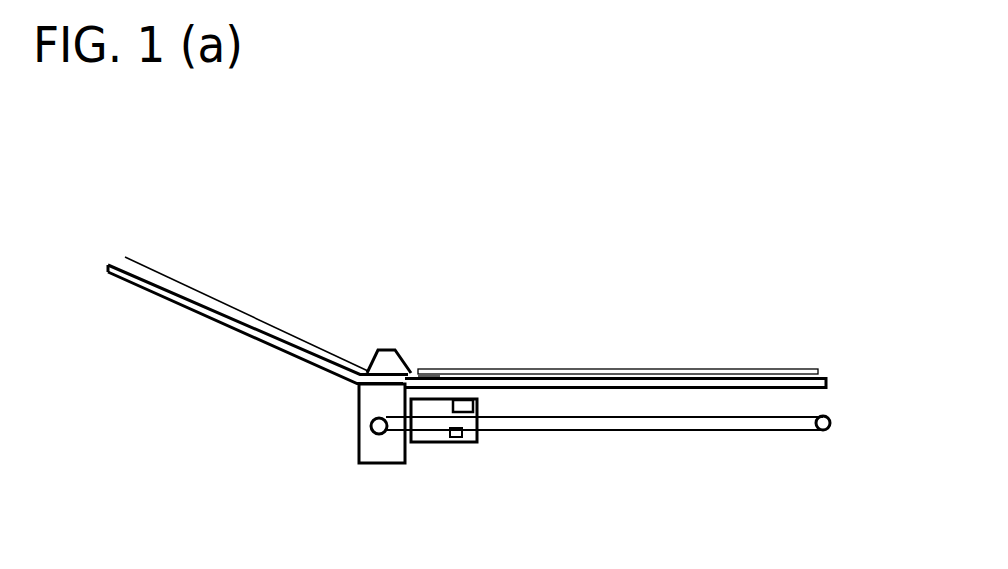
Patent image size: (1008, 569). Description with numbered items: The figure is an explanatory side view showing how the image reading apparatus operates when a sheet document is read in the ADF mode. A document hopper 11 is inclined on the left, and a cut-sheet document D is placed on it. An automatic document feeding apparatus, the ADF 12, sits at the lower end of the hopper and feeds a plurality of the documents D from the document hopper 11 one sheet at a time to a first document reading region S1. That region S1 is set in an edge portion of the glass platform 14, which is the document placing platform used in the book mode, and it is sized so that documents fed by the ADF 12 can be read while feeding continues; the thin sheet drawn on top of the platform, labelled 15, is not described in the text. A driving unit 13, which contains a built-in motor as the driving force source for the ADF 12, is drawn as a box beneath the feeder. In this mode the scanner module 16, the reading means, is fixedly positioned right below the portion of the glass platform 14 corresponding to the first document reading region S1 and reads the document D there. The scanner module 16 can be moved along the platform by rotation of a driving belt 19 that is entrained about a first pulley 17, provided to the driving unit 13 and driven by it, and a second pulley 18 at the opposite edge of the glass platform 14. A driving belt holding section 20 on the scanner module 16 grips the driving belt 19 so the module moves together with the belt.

The document hopper 11 is at (172, 300).
The document D is at (247, 318).
The automatic document feeding apparatus (ADF) 12 is at (400, 355).
The driving unit 13 is at (377, 467).
The glass platform 14 is at (757, 387).
The conveyed document sheet 15 is at (693, 370).
The scanner module 16 is at (433, 445).
The first pulley 17 is at (370, 427).
The second pulley 18 is at (833, 422).
The driving belt 19 is at (673, 433).
The driving belt holding section 20 is at (462, 443).
The first document reading region S1 is at (455, 375).